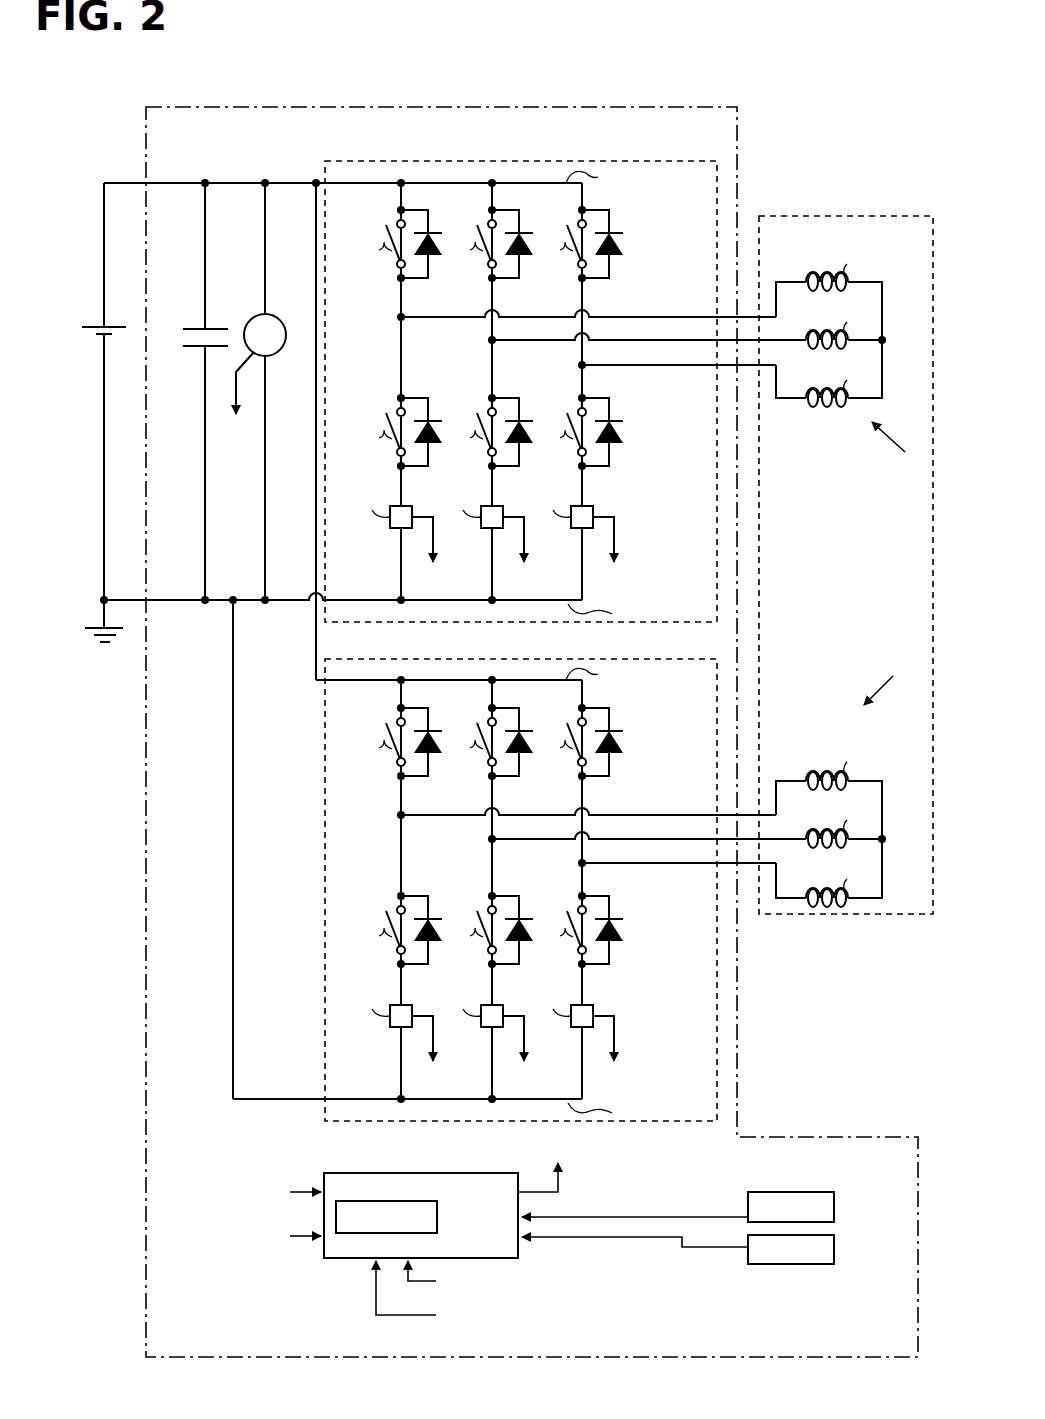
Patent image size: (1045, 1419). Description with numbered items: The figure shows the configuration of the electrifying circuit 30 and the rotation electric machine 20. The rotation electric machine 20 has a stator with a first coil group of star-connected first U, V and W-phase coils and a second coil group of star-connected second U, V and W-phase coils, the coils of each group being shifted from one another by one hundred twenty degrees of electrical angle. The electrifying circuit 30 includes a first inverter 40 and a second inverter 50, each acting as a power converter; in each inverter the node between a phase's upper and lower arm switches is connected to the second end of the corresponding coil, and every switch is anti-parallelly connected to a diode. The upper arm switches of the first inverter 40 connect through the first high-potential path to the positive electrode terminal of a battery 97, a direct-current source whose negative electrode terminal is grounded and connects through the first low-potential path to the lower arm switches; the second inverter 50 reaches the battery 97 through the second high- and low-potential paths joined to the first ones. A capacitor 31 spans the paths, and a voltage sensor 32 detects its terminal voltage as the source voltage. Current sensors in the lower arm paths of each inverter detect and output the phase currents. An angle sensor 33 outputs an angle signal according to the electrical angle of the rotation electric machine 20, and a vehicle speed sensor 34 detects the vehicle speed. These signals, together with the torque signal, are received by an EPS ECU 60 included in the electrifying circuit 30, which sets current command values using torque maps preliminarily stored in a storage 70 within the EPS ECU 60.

The rotation electric machine 20 is at (790, 213).
The electrifying circuit 30 is at (740, 151).
The capacitor 31 is at (189, 324).
The voltage sensor 32 is at (255, 314).
The angle sensor 33 is at (818, 1191).
The vehicle speed sensor 34 is at (836, 1250).
The first inverter 40 is at (350, 158).
The second inverter 50 is at (350, 656).
The EPS ECU 60 is at (496, 1232).
The storage 70 is at (366, 1208).
The battery 97 is at (88, 324).